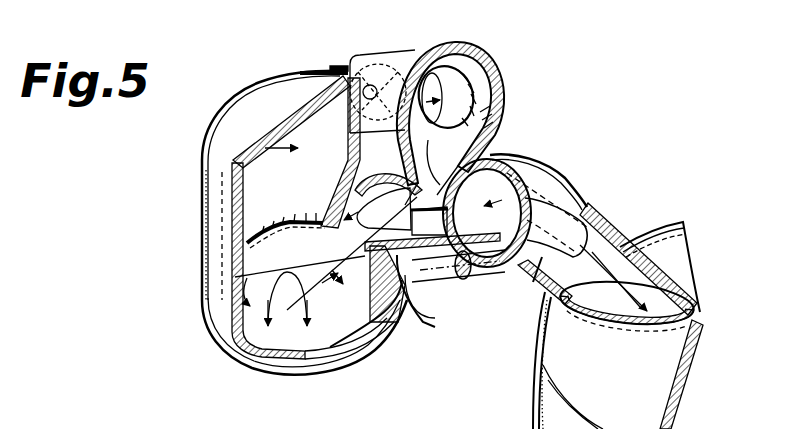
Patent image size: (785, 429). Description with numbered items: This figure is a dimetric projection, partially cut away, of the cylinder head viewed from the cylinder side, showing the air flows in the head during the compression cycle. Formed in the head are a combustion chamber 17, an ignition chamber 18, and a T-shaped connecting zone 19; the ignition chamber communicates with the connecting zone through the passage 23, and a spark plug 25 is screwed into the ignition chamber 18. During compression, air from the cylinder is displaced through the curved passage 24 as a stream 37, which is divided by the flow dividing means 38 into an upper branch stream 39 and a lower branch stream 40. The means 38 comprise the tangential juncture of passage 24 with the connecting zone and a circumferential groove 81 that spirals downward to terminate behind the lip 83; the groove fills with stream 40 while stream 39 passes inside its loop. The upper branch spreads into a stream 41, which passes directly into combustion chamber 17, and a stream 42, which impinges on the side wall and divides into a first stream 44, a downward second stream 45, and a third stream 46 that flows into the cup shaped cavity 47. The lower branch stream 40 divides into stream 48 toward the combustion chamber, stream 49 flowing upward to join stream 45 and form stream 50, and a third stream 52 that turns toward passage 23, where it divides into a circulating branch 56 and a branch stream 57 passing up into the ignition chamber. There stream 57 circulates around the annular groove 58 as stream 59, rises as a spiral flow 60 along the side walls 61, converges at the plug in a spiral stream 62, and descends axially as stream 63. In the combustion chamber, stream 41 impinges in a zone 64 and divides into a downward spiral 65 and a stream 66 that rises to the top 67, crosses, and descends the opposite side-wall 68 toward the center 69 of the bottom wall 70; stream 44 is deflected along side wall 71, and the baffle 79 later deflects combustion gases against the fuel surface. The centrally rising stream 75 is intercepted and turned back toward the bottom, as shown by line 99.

The combustion chamber 17 is at (200, 162).
The ignition chamber 18 is at (405, 48).
The T-shaped connecting zone 19 is at (330, 204).
The passage 23 is at (487, 158).
The curved passage 24 is at (598, 232).
The spark plug 25 is at (345, 68).
The stream 37 is at (622, 290).
The flow dividing means 38 is at (537, 187).
The upper branch stream 39 is at (462, 270).
The lower branch stream 40 is at (430, 278).
The stream 41 is at (370, 195).
The stream 42 is at (429, 221).
The first stream 44 is at (304, 256).
The second stream 45 is at (370, 237).
The third stream 46 is at (375, 190).
The cup shaped cavity 47 is at (388, 178).
The stream 48 is at (338, 271).
The stream 49 is at (352, 253).
The stream 50 is at (390, 332).
The third stream 52 is at (384, 209).
The branch 56 is at (418, 295).
The branch stream 57 is at (489, 118).
The annular groove 58 is at (484, 68).
The stream 59 is at (497, 86).
The spiral flow 60 is at (462, 50).
The side walls 61 is at (446, 45).
The spiral stream 62 is at (377, 45).
The stream 63 is at (347, 118).
The zone 64 is at (230, 273).
The spiral 65 is at (240, 338).
The stream 66 is at (215, 208).
The top 67 is at (285, 121).
The side-wall 68 is at (405, 310).
The center 69 is at (340, 346).
The bottom wall 70 is at (300, 356).
The side wall 71 is at (282, 262).
The centrally rising air stream 75 is at (310, 307).
The baffle 79 is at (297, 222).
The circumferential groove 81 is at (502, 284).
The lip 83 is at (468, 278).
The line 99 is at (275, 299).